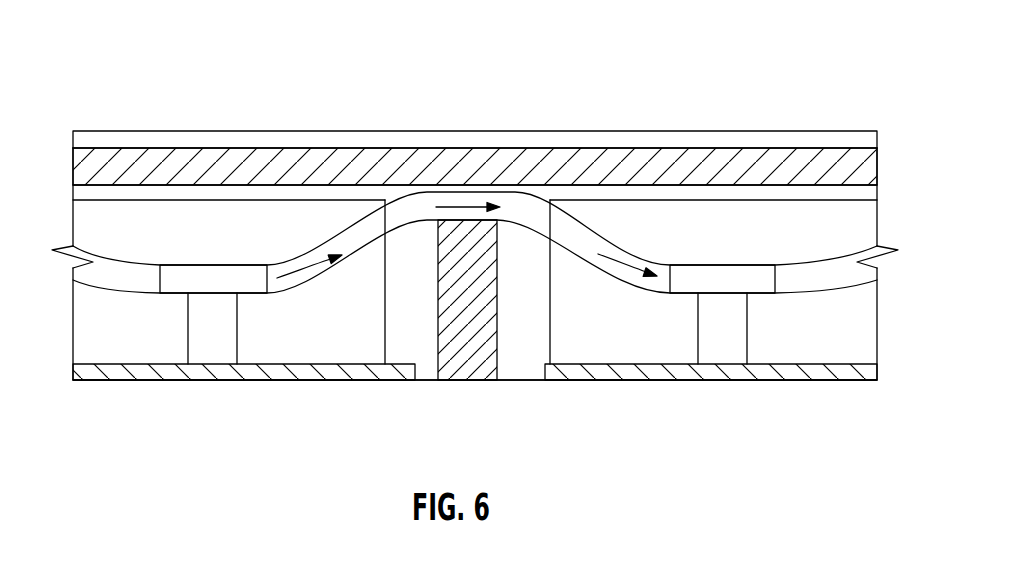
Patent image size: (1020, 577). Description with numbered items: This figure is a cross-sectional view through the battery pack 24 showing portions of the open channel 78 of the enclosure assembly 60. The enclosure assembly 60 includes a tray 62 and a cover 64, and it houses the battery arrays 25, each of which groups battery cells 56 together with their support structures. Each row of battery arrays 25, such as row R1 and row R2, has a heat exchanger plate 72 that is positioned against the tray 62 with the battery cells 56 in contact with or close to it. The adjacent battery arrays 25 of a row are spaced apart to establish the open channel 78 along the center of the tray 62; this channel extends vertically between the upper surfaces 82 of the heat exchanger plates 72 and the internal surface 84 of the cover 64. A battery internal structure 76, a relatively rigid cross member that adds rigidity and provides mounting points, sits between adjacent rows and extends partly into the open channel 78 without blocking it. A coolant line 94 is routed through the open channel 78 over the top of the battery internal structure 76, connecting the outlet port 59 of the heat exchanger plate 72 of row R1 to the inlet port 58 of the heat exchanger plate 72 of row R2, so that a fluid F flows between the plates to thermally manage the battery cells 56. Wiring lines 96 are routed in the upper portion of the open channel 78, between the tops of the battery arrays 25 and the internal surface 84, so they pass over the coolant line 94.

The battery pack 24 is at (148, 45).
The battery array 25 is at (93, 219).
The battery cells 56 is at (222, 249).
The inlet port 58 is at (740, 268).
The outlet port 59 is at (240, 272).
The enclosure assembly 60 is at (130, 390).
The tray 62 is at (197, 382).
The cover 64 is at (148, 130).
The heat exchanger plate 72 is at (305, 375).
The battery internal structure 76 is at (460, 368).
The open channel 78 is at (527, 310).
The upper surface 82 is at (400, 362).
The internal surface 84 is at (270, 133).
The coolant line 94 is at (415, 208).
The wiring line 96 is at (702, 158).
The row R1 is at (186, 195).
The row R2 is at (787, 193).
The fluid F is at (468, 207).